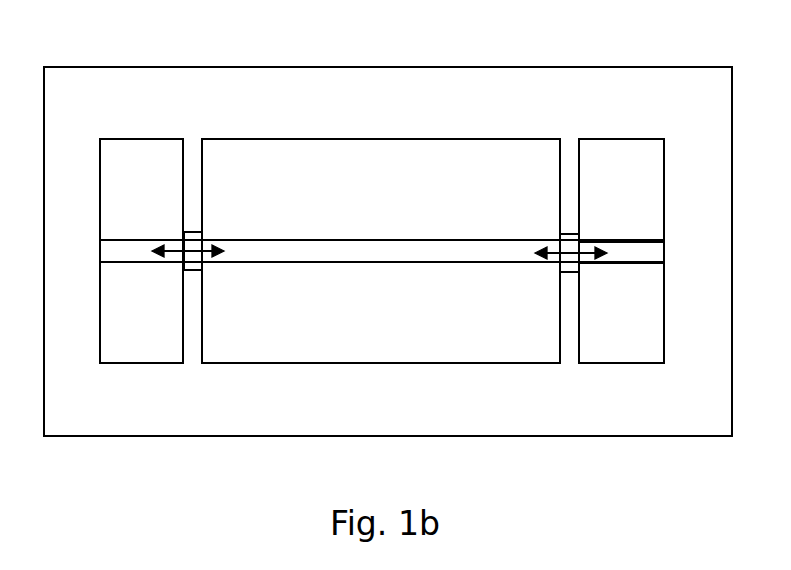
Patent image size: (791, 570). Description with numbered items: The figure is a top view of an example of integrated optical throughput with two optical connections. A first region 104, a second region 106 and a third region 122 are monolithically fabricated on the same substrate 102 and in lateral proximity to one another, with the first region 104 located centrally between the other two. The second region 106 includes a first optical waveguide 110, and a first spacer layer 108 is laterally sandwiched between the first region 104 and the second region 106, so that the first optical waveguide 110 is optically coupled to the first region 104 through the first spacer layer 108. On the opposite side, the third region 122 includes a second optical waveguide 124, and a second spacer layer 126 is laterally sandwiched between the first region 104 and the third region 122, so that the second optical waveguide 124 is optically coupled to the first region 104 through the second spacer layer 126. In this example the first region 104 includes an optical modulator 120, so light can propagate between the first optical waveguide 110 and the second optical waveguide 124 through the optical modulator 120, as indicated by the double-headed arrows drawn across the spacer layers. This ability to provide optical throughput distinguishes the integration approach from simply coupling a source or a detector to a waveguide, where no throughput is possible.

The substrate 102 is at (160, 118).
The first region 104 is at (400, 188).
The second region 106 is at (643, 192).
The first spacer layer 108 is at (565, 234).
The first optical waveguide 110 is at (632, 254).
The optical modulator 120 is at (280, 248).
The third region 122 is at (166, 192).
The second optical waveguide 124 is at (133, 254).
The second spacer layer 126 is at (196, 232).